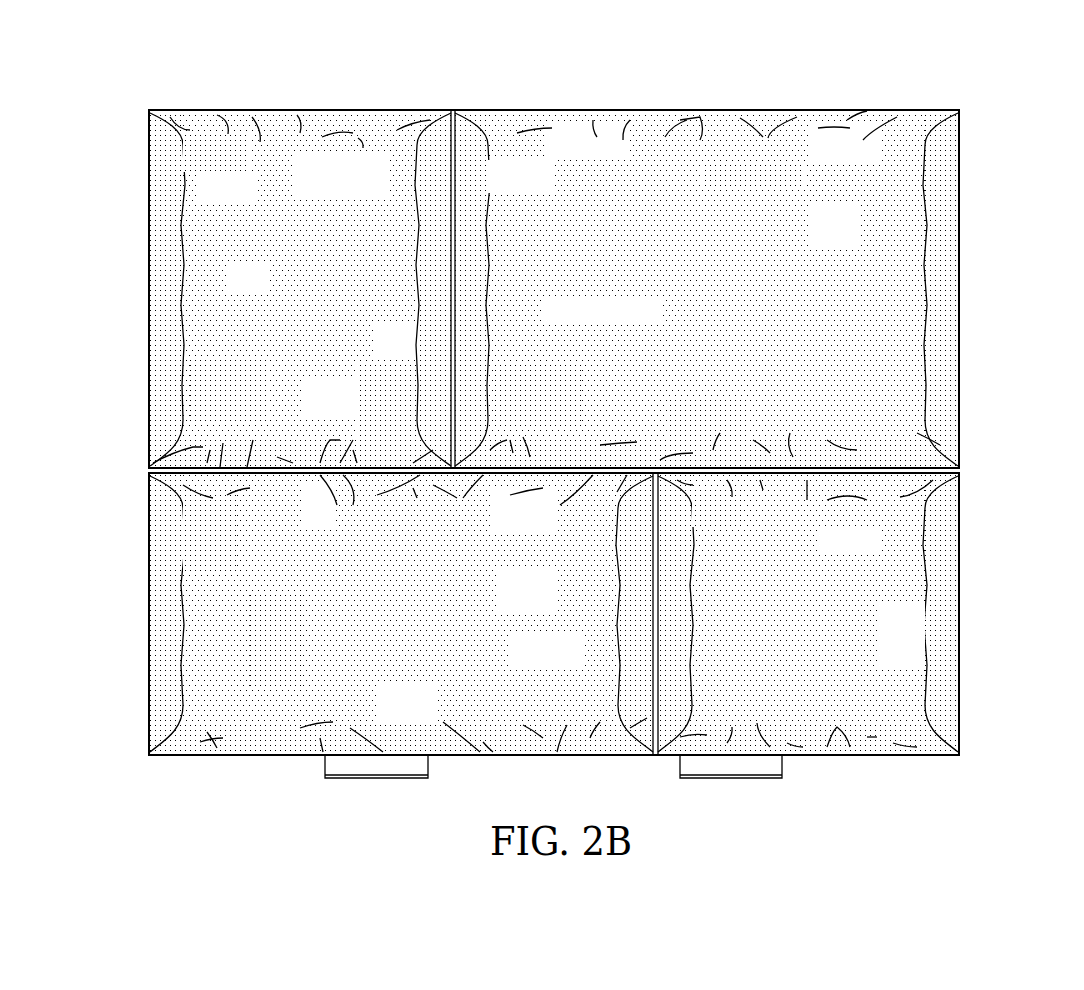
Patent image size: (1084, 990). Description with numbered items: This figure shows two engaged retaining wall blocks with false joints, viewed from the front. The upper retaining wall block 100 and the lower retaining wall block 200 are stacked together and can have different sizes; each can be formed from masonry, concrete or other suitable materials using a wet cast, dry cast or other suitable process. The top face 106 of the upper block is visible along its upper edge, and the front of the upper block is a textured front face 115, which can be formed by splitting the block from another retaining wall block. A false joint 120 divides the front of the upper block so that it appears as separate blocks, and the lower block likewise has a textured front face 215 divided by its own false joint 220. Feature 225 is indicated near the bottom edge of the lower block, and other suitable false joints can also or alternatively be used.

The retaining wall block 100 is at (129, 303).
The top face 106 is at (718, 110).
The textured front face 115 is at (288, 156).
The false joint 120 is at (446, 156).
The retaining wall block 200 is at (129, 604).
The textured front face 215 is at (292, 700).
The false joint 220 is at (645, 718).
The support foot 225 is at (873, 758).